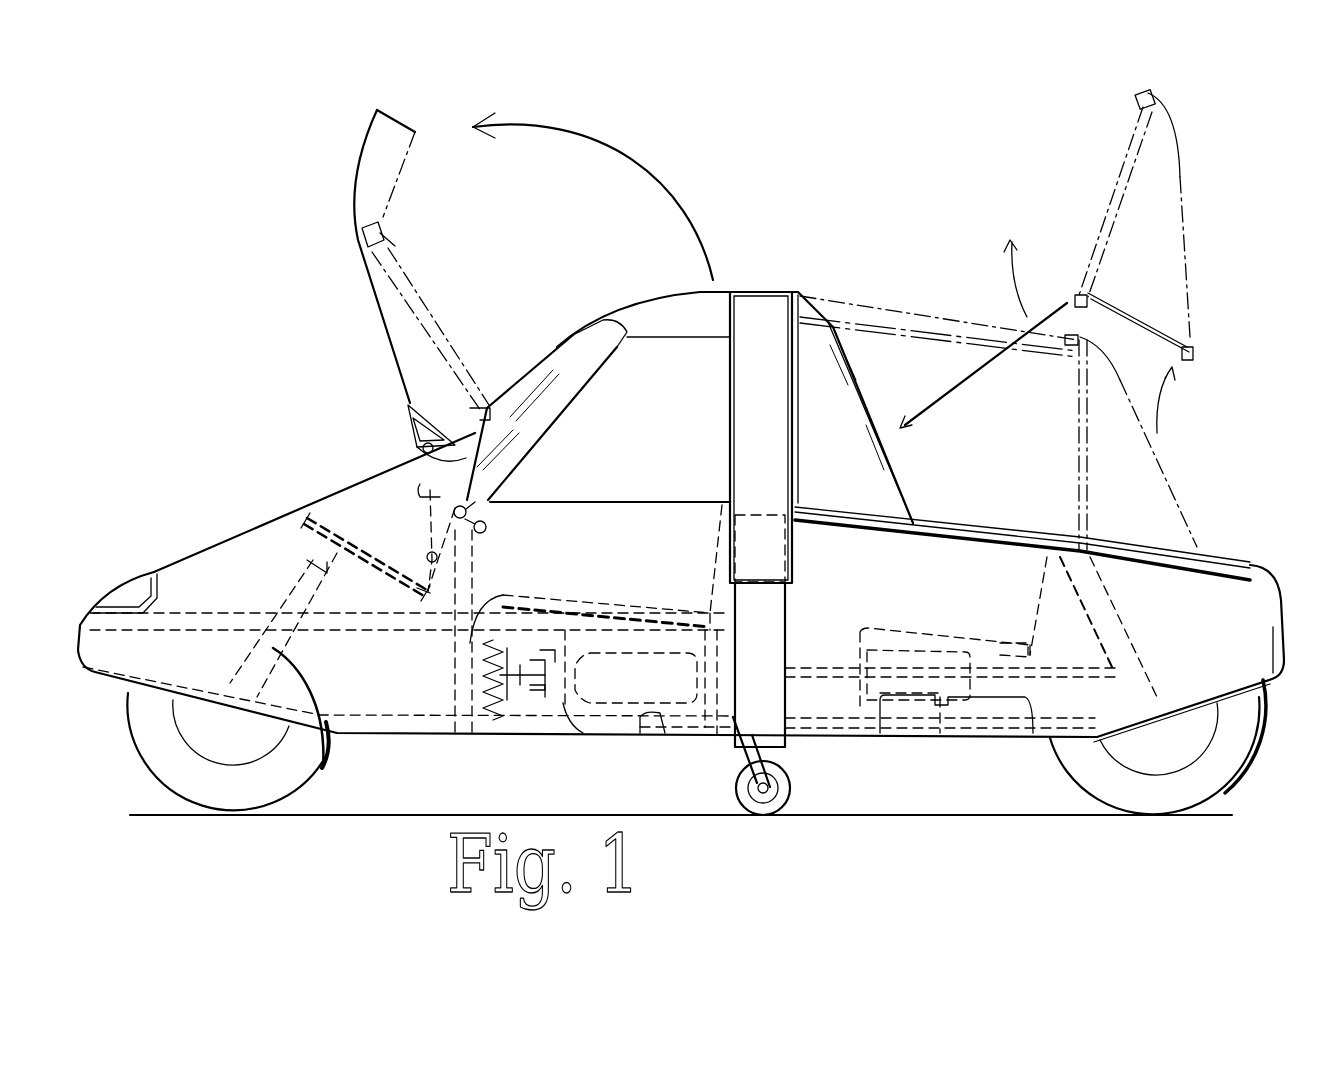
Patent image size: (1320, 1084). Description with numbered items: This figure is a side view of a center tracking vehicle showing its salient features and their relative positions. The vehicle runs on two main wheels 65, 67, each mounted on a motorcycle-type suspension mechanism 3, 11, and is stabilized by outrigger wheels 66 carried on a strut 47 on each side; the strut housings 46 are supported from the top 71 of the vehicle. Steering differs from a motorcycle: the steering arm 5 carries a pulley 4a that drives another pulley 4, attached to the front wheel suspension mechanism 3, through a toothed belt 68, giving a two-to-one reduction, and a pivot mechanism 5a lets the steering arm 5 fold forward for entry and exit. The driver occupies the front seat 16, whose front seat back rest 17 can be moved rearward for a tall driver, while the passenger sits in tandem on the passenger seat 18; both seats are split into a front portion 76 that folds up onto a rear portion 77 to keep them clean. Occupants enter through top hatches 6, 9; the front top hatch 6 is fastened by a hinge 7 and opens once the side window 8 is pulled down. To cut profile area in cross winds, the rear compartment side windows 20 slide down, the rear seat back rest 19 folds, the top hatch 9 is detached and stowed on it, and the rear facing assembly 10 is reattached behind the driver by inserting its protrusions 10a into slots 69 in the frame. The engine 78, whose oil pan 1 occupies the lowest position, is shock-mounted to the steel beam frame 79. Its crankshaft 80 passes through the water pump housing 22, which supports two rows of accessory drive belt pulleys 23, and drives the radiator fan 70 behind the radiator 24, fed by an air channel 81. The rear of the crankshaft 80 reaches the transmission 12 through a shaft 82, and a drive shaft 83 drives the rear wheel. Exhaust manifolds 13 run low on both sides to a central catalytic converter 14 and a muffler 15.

The oil pan 1 is at (632, 735).
The front wheel suspension mechanism 3 is at (322, 762).
The pulley 4 is at (325, 537).
The pulley 4a is at (418, 600).
The steering arm 5 is at (430, 463).
The pivot mechanism 5a is at (430, 548).
The front top hatch 6 is at (383, 217).
The hinge 7 is at (463, 487).
The side window 8 is at (628, 393).
The top hatch 9 is at (887, 310).
The rear facing assembly 10 is at (1158, 248).
The protrusions 10a is at (1137, 98).
The rear wheel suspension mechanism 11 is at (1100, 590).
The transmission 12 is at (912, 677).
The exhaust manifolds 13 is at (818, 723).
The catalytic converter 14 is at (897, 727).
The muffler 15 is at (983, 723).
The front seat 16 is at (600, 590).
The front seat back rest 17 is at (713, 573).
The passenger seat 18 is at (950, 620).
The rear seat back rest 19 is at (1040, 580).
The rear compartment side windows 20 is at (943, 367).
The water pump housing 22 is at (553, 660).
The accessory drive belt pulleys 23 is at (537, 692).
The radiator 24 is at (490, 700).
The strut housings 46 is at (767, 465).
The strut 47 is at (750, 713).
The front main wheel 65 is at (147, 762).
The outrigger wheels 66 is at (757, 815).
The rear main wheel 67 is at (1227, 780).
The toothed belt 68 is at (373, 562).
The slots 69 is at (900, 500).
The radiator fan 70 is at (507, 700).
The top of the vehicle 71 is at (752, 290).
The front portion 76 is at (533, 600).
The rear portion 77 is at (668, 612).
The engine 78 is at (608, 747).
The steel beam frame 79 is at (541, 492).
The engine crankshaft 80 is at (517, 677).
The channel 81 is at (475, 693).
The shaft 82 is at (810, 675).
The drive shaft 83 is at (1022, 673).